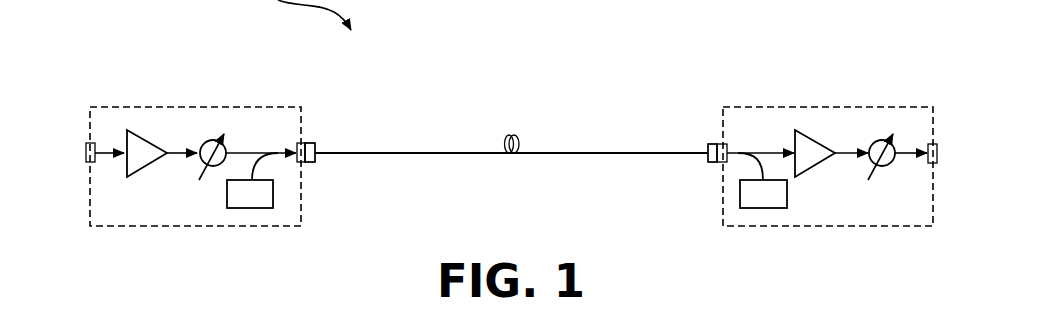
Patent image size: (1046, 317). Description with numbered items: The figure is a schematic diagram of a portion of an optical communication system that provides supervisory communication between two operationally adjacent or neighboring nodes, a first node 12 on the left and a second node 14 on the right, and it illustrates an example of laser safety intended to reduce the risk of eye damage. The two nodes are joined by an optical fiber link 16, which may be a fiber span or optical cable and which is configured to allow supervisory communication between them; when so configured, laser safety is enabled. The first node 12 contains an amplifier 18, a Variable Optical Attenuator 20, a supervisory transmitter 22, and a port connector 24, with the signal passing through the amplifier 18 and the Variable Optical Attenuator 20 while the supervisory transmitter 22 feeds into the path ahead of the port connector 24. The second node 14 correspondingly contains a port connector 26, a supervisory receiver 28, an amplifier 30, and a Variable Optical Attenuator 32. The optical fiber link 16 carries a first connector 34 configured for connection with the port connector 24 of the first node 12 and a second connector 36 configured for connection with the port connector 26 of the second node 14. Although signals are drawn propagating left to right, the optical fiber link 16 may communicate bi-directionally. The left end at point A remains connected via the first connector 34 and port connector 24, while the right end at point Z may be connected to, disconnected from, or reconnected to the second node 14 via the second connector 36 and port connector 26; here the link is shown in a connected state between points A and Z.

The first node 12 is at (225, 107).
The second node 14 is at (805, 107).
The optical fiber link 16 is at (472, 152).
The amplifier 18 is at (144, 168).
The Variable Optical Attenuator (VOA) 20 is at (207, 140).
The supervisory transmitter 22 is at (240, 208).
The port connector 24 is at (298, 143).
The port connector 26 is at (727, 146).
The supervisory receiver 28 is at (757, 208).
The amplifier 30 is at (817, 170).
The Variable Optical Attenuator (VOA) 32 is at (875, 140).
The first connector 34 is at (310, 162).
The second connector 36 is at (713, 163).